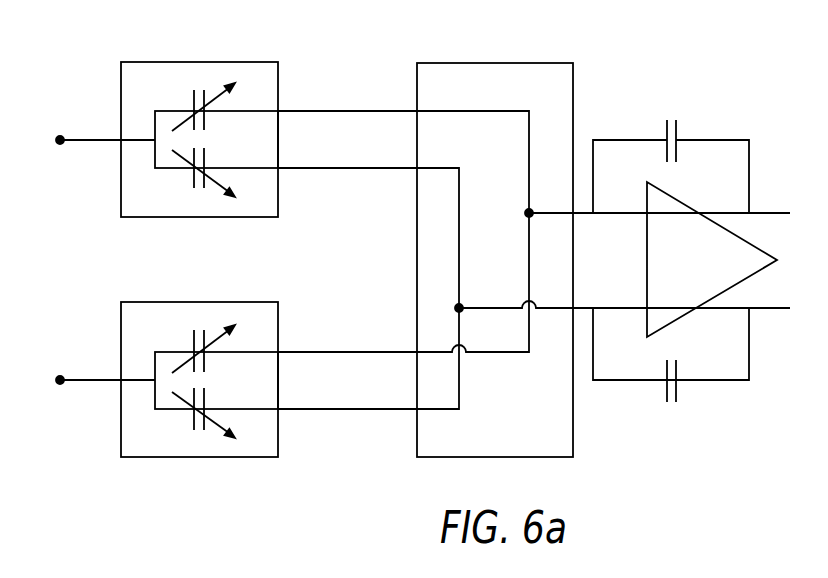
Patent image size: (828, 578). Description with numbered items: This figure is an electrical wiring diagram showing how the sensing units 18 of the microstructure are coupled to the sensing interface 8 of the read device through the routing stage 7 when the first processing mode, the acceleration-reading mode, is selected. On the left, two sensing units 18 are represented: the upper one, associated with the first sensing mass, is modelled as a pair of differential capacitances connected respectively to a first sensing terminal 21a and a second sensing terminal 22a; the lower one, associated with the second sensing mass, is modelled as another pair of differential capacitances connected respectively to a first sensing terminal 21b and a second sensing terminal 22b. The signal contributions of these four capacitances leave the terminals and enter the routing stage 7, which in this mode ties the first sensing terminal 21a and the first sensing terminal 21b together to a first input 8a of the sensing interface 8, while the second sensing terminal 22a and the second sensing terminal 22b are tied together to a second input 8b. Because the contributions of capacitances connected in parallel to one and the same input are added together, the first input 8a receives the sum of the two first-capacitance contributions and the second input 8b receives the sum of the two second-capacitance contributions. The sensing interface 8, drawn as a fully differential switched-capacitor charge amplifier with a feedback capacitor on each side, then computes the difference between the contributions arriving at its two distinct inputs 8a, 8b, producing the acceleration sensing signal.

The sensing unit 18 is at (198, 62).
The first sensing terminal 21a is at (288, 110).
The second sensing terminal 22a is at (288, 170).
The first sensing terminal 21b is at (288, 349).
The second sensing terminal 22b is at (288, 411).
The routing stage 7 is at (487, 63).
The sensing interface 8 is at (690, 109).
The first input 8a is at (529, 213).
The second input 8b is at (459, 308).